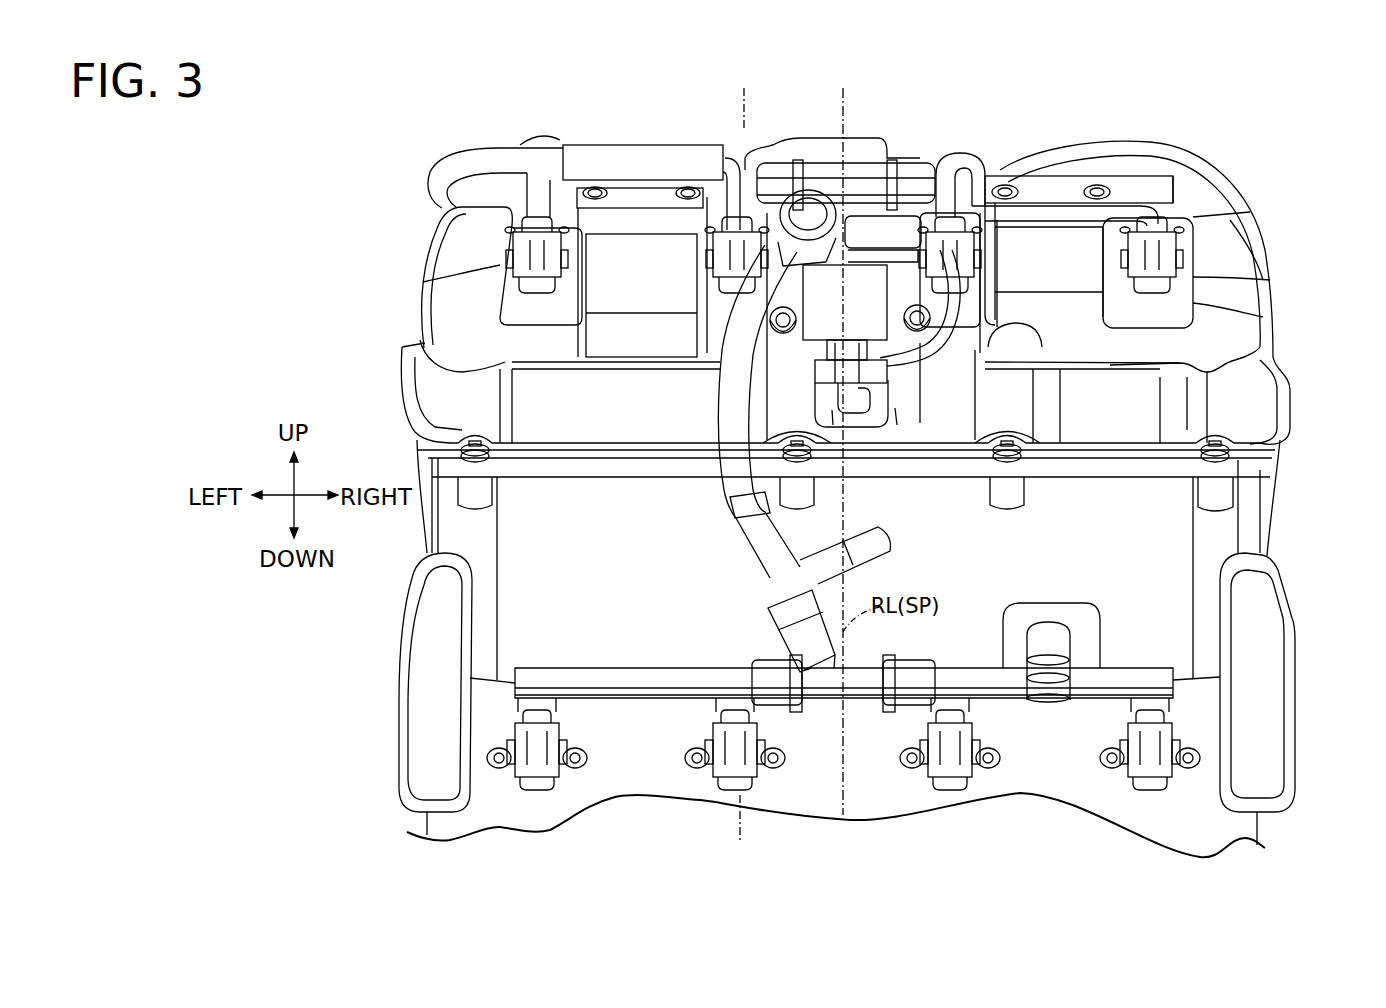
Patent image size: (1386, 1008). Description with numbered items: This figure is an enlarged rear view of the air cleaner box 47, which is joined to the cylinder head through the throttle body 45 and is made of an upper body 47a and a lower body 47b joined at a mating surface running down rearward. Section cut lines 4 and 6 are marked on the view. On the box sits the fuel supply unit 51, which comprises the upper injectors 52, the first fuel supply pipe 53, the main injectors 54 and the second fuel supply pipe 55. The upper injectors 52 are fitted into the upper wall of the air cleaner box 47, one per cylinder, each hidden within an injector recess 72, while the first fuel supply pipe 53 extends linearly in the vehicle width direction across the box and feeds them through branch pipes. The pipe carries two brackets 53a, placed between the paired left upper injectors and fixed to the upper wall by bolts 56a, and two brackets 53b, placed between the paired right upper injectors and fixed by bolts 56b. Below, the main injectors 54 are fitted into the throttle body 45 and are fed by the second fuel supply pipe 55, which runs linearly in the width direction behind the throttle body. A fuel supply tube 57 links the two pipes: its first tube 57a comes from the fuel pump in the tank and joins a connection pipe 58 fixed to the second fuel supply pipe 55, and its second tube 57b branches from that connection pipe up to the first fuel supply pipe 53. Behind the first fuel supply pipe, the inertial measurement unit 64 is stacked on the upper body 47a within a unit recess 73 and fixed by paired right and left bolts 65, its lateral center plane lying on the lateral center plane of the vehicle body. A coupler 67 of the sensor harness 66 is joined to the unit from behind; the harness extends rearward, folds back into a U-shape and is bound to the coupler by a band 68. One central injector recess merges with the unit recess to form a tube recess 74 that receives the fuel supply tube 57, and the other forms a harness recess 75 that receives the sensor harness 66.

The section line 4 is at (734, 97).
The section line 6 is at (832, 97).
The throttle body 45 is at (1207, 703).
The air cleaner box 47 is at (1290, 425).
The upper body 47a is at (1215, 240).
The lower body 47b is at (1283, 515).
The fuel supply unit 51 is at (1185, 168).
The upper injectors 52 is at (540, 245).
The first fuel supply pipe 53 is at (1062, 175).
The brackets 53a is at (600, 212).
The brackets 53b is at (1003, 222).
The main injectors 54 is at (548, 703).
The second fuel supply pipe 55 is at (962, 668).
The bolts 56a is at (595, 188).
The bolts 56b is at (1005, 185).
The fuel supply tube 57 is at (722, 437).
The first tube 57a is at (868, 560).
The second tube 57b is at (730, 495).
The connection pipe 58 is at (778, 590).
The inertial measurement unit 64 is at (867, 320).
The bolts 65 is at (790, 313).
The sensor harness 66 is at (890, 408).
The coupler 67 is at (833, 413).
The band 68 is at (820, 370).
The injector recess 72 is at (938, 165).
The unit recess 73 is at (897, 410).
The tube recess 74 is at (833, 225).
The harness recess 75 is at (985, 295).